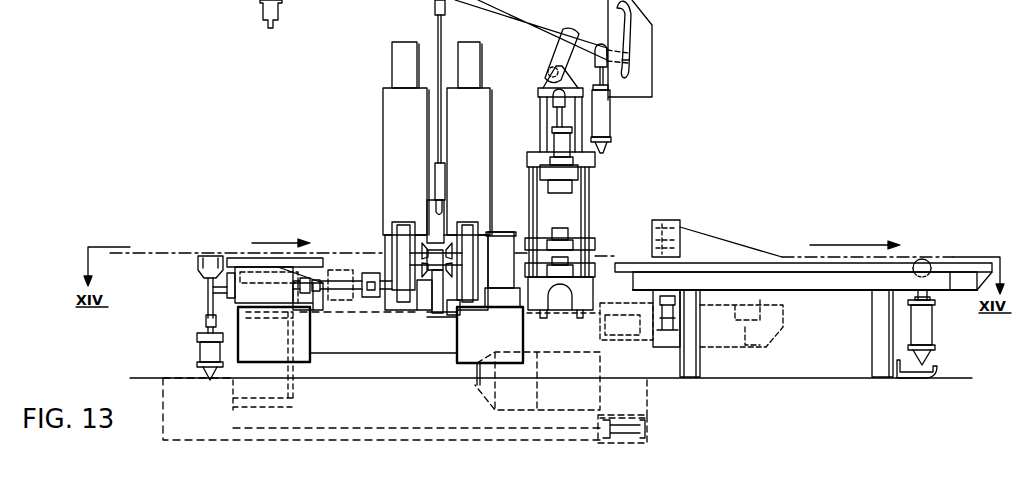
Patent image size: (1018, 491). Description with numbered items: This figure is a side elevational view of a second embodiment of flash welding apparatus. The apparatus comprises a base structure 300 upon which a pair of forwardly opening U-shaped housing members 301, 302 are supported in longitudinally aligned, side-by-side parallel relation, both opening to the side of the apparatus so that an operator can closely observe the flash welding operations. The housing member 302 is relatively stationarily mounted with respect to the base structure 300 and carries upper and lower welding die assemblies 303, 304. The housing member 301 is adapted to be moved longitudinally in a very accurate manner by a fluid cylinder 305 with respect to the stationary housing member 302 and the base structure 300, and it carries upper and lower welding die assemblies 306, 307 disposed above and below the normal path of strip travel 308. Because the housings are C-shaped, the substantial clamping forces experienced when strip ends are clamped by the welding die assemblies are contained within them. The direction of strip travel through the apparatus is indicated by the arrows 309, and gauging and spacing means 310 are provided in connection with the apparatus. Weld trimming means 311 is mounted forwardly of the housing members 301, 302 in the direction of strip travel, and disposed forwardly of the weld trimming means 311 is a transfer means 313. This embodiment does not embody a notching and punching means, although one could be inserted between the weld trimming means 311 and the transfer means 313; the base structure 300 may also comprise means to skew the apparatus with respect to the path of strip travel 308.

The base structure 300 is at (403, 345).
The U-shaped housing member 301 is at (392, 110).
The U-shaped housing member 302 is at (516, 91).
The upper welding die assembly 303 is at (458, 248).
The lower welding die assembly 304 is at (490, 335).
The fluid cylinder 305 is at (258, 282).
The upper welding die assembly 306 is at (412, 252).
The lower welding die assembly 307 is at (420, 270).
The normal path of strip travel 308 is at (142, 251).
The arrows 309 is at (281, 241).
The gauging and spacing means 310 is at (447, 50).
The weld trimming means 311 is at (622, 145).
The transfer means 313 is at (812, 232).